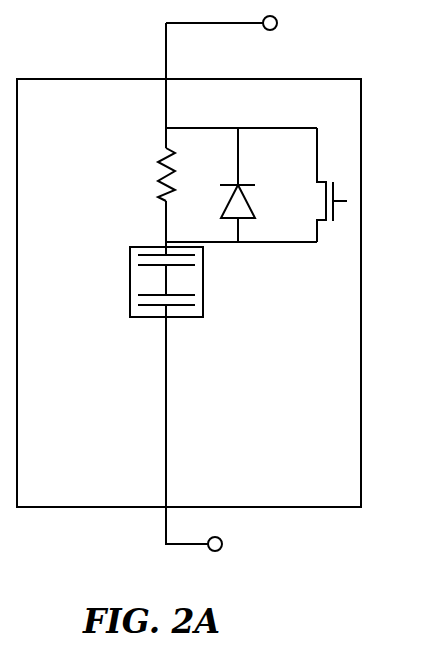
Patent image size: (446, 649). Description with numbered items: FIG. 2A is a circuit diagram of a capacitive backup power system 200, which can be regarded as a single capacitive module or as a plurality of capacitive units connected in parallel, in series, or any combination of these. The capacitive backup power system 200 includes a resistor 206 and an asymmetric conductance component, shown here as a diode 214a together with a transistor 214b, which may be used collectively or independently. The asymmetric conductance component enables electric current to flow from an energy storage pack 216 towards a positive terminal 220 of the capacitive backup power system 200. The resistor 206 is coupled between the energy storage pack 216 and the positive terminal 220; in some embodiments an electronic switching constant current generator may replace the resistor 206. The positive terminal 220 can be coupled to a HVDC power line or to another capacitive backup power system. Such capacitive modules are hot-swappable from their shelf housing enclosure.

The capacitive backup power system 200 is at (355, 500).
The resistor 206 is at (166, 153).
The diode 214a is at (250, 202).
The transistor 214b is at (335, 186).
The energy storage pack 216 is at (203, 290).
The positive terminal 220 is at (275, 27).